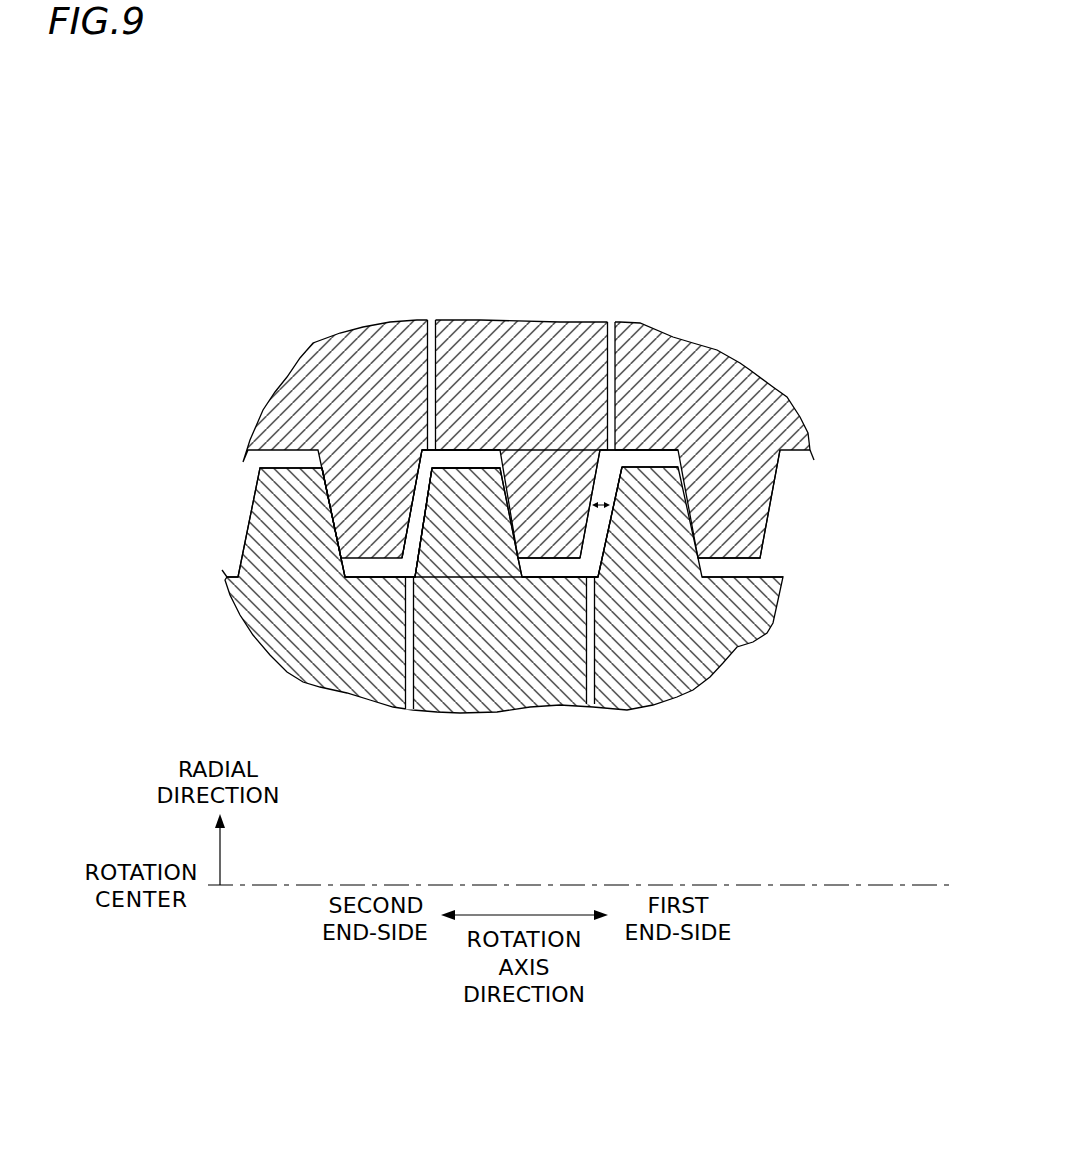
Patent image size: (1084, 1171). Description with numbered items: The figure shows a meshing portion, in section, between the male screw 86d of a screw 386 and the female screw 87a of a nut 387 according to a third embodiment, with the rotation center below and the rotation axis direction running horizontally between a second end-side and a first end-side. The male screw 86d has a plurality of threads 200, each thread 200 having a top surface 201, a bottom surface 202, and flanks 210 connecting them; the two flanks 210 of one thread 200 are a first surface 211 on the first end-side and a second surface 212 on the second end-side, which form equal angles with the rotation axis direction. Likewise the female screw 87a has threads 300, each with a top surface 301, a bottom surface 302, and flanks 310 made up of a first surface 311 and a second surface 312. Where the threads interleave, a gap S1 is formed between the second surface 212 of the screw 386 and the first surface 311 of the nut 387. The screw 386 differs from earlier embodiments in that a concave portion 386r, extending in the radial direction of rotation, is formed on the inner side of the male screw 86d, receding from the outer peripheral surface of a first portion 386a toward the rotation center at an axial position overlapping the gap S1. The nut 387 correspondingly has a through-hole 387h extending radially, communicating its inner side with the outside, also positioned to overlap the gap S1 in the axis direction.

The thread 200 is at (443, 219).
The flank 210 is at (397, 266).
The second surface 212 is at (422, 462).
The first surface 211 is at (496, 460).
The bottom surface 202 is at (562, 568).
The top surface 201 is at (650, 462).
The through-hole 387h is at (611, 322).
The nut 387 is at (728, 336).
The female screw 87a is at (816, 500).
The first portion 386a is at (771, 577).
The screw 386 is at (726, 711).
The concave portion 386r is at (590, 700).
The male screw 86d is at (207, 513).
The thread 300 is at (335, 809).
The flank 310 is at (427, 764).
The second surface 312 is at (338, 530).
The first surface 311 is at (463, 476).
The bottom surface 302 is at (467, 566).
The top surface 301 is at (534, 566).
The gap S1 is at (603, 515).